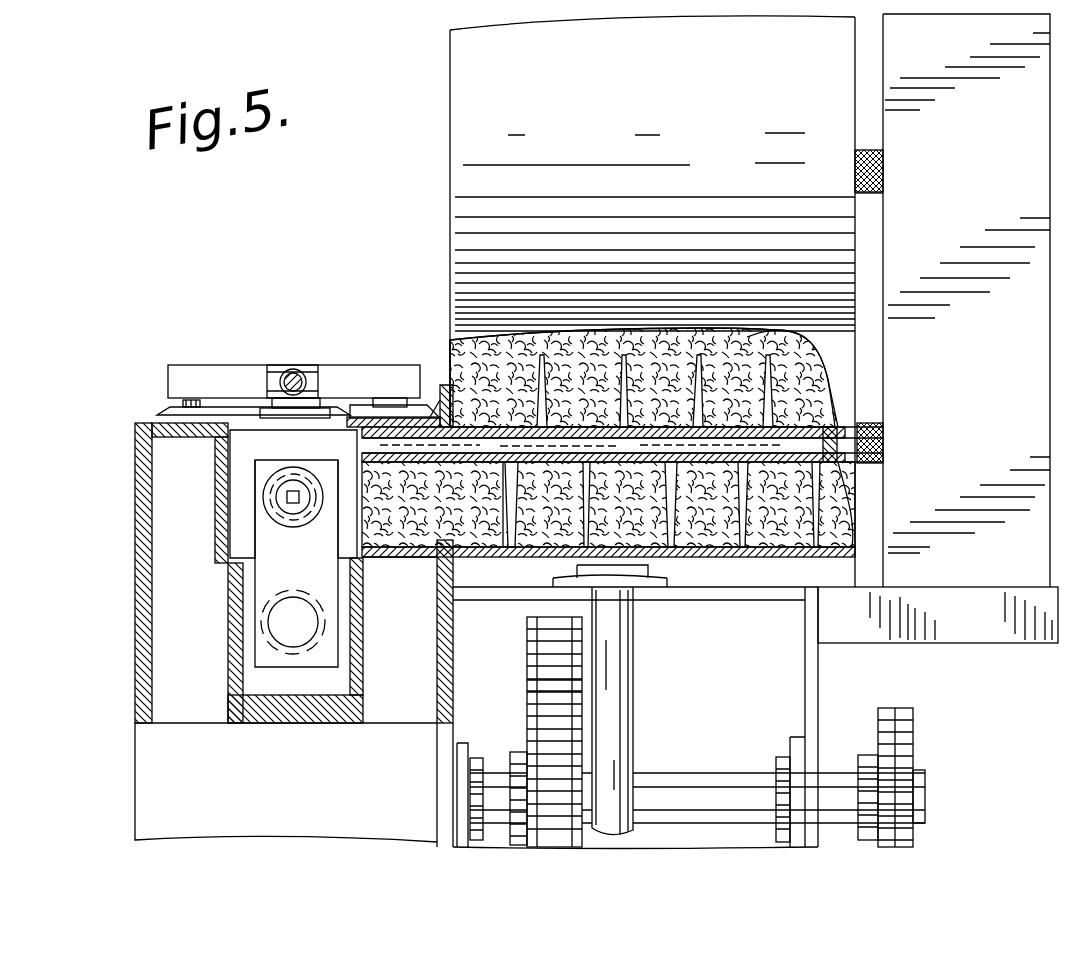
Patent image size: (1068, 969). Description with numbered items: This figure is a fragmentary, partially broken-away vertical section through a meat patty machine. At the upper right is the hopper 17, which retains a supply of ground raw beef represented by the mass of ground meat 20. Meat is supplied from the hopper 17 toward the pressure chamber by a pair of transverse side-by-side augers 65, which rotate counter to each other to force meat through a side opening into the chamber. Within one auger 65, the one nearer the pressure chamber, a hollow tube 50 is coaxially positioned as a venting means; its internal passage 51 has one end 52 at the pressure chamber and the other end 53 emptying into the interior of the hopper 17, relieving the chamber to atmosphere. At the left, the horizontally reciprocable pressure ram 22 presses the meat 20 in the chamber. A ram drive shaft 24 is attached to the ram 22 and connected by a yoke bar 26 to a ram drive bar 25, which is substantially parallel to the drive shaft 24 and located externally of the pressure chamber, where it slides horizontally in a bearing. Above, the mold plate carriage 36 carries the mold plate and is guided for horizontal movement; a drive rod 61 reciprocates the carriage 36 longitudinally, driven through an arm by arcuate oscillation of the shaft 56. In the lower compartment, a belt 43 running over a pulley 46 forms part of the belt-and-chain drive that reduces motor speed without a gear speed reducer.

The hopper 17 is at (682, 88).
The mass of ground meat 20 is at (608, 437).
The pressure ram 22 is at (248, 448).
The ram drive shaft 24 is at (284, 516).
The ram drive bar 25 is at (293, 622).
The yoke bar 26 is at (296, 563).
The mold plate carriage 36 is at (233, 375).
The belt 43 is at (546, 685).
The pulley 46 is at (527, 642).
The hollow tube 50 is at (553, 460).
The internal passage 51 is at (712, 460).
The one end of the internal passage 52 is at (358, 452).
The other end of the internal passage 53 is at (842, 470).
The shaft 56 is at (625, 670).
The drive rod 61 is at (296, 370).
The augers 65 is at (628, 366).